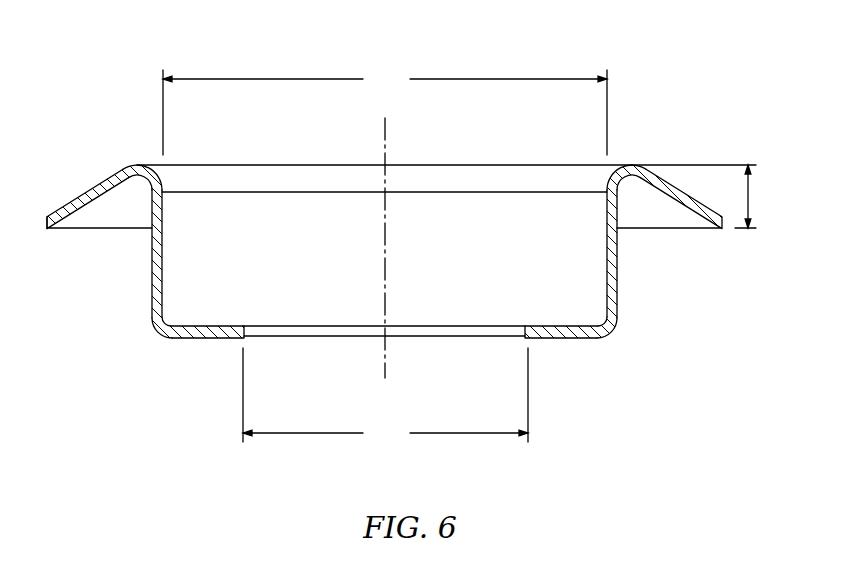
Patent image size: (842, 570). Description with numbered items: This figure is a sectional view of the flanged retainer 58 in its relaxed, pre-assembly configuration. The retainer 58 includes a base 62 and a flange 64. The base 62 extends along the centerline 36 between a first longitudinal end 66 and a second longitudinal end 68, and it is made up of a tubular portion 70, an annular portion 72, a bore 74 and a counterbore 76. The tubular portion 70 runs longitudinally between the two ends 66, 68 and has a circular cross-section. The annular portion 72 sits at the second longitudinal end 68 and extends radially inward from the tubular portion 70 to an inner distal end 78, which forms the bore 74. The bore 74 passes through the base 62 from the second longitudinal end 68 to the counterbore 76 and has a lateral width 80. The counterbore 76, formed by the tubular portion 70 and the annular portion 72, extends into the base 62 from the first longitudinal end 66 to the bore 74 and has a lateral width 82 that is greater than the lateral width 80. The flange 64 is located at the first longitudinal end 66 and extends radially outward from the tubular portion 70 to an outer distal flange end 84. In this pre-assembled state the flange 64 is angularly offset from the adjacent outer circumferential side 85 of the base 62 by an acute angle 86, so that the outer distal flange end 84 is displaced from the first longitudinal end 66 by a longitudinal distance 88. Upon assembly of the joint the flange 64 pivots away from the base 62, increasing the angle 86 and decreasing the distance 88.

The flanged retainer 58 is at (652, 91).
The base 62 is at (619, 287).
The tubular portion 70 is at (151, 278).
The first longitudinal end 66 is at (145, 162).
The angle 86 is at (622, 207).
The flange 64 is at (90, 172).
The longitudinal distance 88 is at (752, 188).
The outer distal flange end 84 is at (46, 230).
The second longitudinal end 68 is at (160, 340).
The outer circumferential side 85 is at (620, 318).
The annular portion 72 is at (209, 342).
The bore 74 is at (461, 340).
The inner distal end 78 is at (262, 328).
The counterbore 76 is at (477, 255).
The centerline 36 is at (398, 129).
The lateral width 82 is at (385, 111).
The lateral width 80 is at (385, 397).